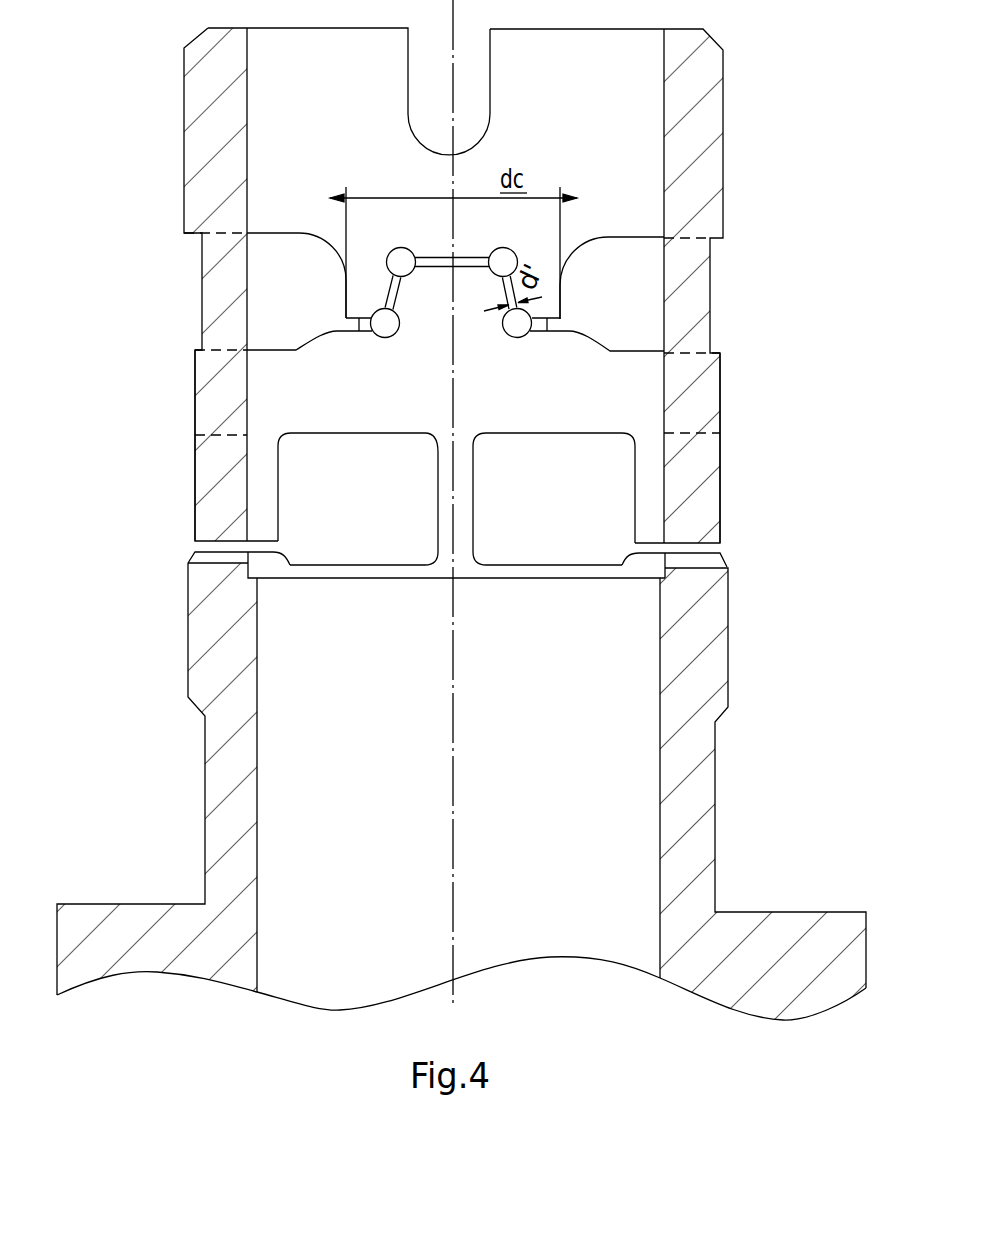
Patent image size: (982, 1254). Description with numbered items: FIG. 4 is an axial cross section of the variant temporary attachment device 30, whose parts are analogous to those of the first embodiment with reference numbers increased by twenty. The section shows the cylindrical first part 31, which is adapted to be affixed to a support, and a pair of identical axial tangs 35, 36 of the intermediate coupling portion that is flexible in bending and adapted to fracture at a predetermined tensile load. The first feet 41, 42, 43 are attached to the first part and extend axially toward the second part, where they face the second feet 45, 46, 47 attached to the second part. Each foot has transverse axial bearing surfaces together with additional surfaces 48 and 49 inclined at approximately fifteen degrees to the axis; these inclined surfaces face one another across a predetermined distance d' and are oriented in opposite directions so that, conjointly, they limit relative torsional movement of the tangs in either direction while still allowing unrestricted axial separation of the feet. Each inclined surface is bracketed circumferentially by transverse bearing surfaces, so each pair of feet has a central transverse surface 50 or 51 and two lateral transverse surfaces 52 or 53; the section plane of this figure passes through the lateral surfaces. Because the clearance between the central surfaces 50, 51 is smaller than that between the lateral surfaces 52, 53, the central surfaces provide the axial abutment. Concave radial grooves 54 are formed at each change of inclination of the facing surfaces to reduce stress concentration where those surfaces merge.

The temporary attachment device 30 is at (796, 247).
The first part 31 is at (728, 645).
The axial tang 35 is at (710, 308).
The axial tang 36 is at (202, 272).
The first foot 41 is at (462, 383).
The first foot 42 is at (195, 551).
The first foot 43 is at (720, 560).
The second foot 45 is at (439, 248).
The second foot 46 is at (195, 460).
The second foot 47 is at (720, 466).
The inclined surface 48 is at (391, 278).
The inclined surface 49 is at (500, 293).
The central transverse surface 50 is at (470, 257).
The central transverse surface 51 is at (477, 268).
The lateral transverse surface 52 is at (343, 325).
The lateral transverse surface 53 is at (340, 334).
The concave radial groove 54 is at (406, 247).